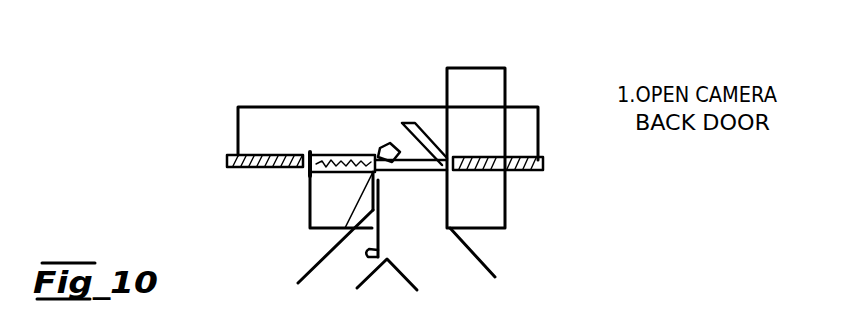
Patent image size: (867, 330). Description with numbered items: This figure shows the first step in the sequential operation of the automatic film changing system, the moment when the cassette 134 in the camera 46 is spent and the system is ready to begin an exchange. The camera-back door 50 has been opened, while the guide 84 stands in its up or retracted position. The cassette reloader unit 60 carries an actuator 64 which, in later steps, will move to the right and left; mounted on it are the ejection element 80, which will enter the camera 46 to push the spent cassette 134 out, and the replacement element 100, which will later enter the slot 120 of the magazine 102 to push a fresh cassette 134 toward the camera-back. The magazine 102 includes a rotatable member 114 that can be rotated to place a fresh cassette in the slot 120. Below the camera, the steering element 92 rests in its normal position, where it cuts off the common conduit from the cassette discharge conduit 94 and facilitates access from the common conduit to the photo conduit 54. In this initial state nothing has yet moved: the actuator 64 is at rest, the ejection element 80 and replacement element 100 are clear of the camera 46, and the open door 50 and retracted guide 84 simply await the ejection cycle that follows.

The cassette reloader unit 60 is at (232, 88).
The actuator 64 is at (265, 105).
The ejection element 80 is at (258, 168).
The replacement element 100 is at (533, 170).
The cassette 134 is at (308, 174).
The camera 46 is at (328, 152).
The door 50 is at (385, 147).
The guide 84 is at (415, 120).
The magazine 102 is at (478, 67).
The rotatable member 114 is at (507, 86).
The slot 120 is at (490, 173).
The steering element 92 is at (380, 240).
The cassette discharge conduit 94 is at (357, 290).
The photo conduit 54 is at (414, 285).